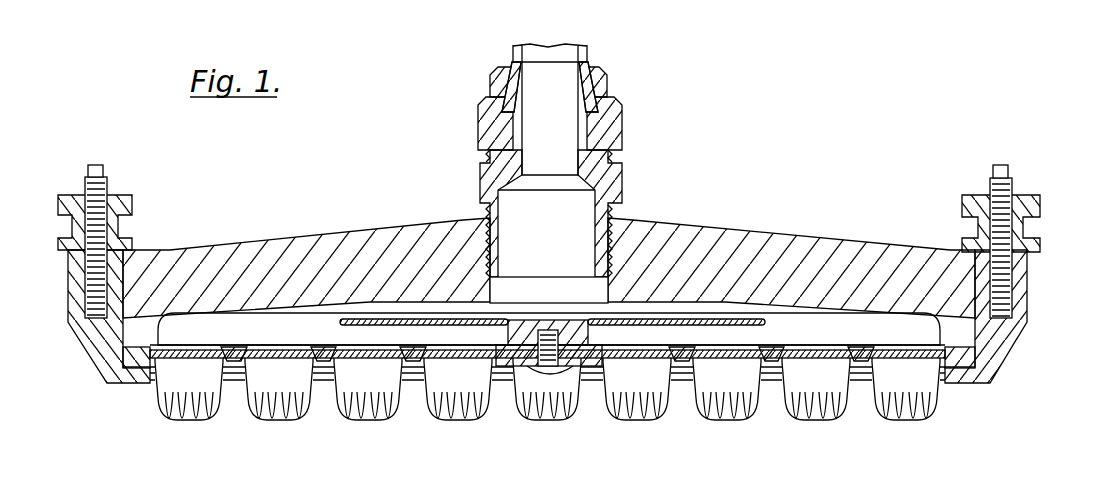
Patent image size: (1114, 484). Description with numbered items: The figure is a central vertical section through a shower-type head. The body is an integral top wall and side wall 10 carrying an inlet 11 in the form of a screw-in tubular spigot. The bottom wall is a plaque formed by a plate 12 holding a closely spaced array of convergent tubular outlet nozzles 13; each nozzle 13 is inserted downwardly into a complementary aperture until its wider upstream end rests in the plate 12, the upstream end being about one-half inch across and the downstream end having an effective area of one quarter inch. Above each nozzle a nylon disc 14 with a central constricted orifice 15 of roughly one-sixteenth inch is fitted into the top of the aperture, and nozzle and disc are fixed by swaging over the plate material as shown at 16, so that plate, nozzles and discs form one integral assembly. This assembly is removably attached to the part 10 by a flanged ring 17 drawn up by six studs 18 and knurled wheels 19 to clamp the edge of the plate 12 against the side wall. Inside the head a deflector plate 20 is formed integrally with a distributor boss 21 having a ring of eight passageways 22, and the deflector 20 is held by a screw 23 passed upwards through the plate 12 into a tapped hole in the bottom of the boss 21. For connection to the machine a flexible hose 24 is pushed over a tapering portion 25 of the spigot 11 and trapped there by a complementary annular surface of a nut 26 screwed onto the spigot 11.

The integral top wall and side wall 10 is at (740, 243).
The inlet 11 is at (587, 166).
The plate 12 is at (232, 382).
The outlet nozzles 13 is at (180, 416).
The nylon disc 14 is at (255, 355).
The constricted orifice 15 is at (280, 353).
The swaging 16 is at (387, 344).
The flanged ring 17 is at (992, 348).
The studs 18 is at (1012, 182).
The knurled wheels 19 is at (1037, 212).
The deflector plate 20 is at (767, 323).
The distributor boss 21 is at (578, 337).
The passageways 22 is at (517, 330).
The screw 23 is at (543, 368).
The flexible hose 24 is at (512, 57).
The tapering portion 25 is at (587, 62).
The nut 26 is at (620, 111).